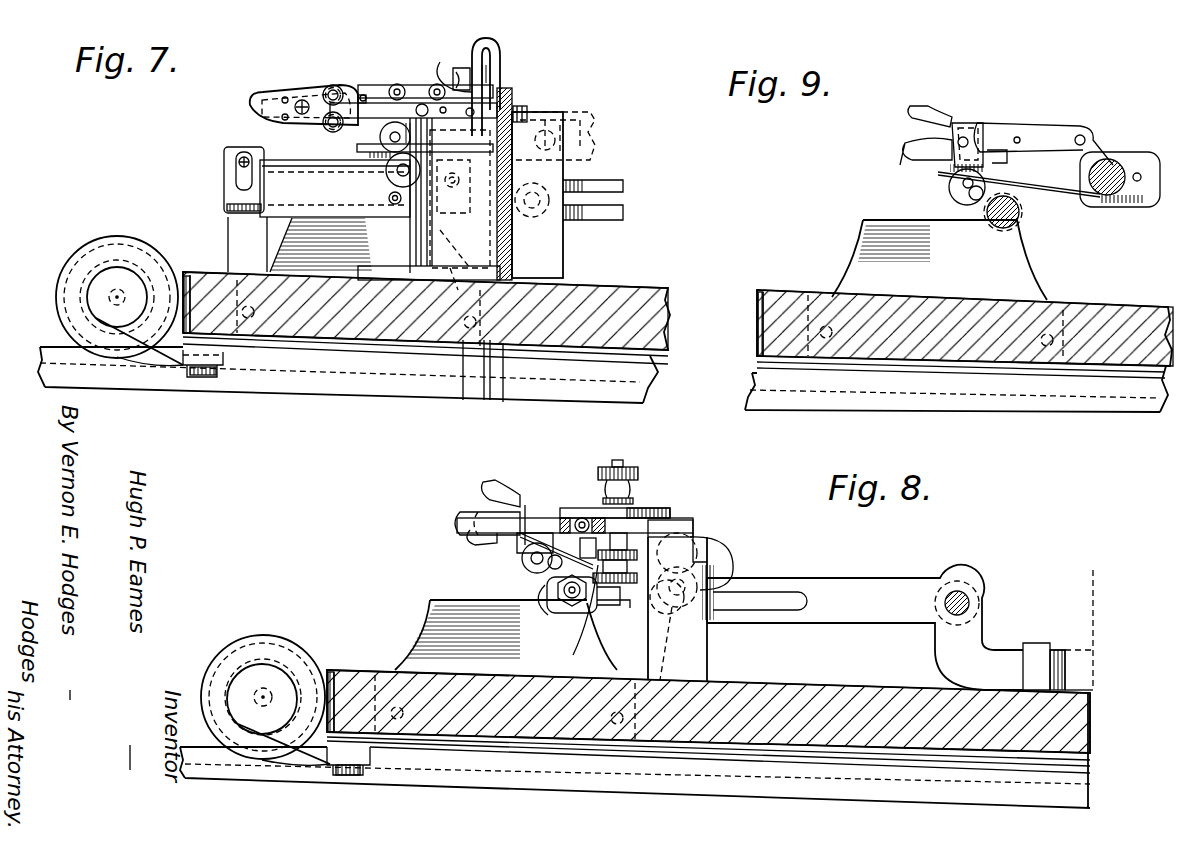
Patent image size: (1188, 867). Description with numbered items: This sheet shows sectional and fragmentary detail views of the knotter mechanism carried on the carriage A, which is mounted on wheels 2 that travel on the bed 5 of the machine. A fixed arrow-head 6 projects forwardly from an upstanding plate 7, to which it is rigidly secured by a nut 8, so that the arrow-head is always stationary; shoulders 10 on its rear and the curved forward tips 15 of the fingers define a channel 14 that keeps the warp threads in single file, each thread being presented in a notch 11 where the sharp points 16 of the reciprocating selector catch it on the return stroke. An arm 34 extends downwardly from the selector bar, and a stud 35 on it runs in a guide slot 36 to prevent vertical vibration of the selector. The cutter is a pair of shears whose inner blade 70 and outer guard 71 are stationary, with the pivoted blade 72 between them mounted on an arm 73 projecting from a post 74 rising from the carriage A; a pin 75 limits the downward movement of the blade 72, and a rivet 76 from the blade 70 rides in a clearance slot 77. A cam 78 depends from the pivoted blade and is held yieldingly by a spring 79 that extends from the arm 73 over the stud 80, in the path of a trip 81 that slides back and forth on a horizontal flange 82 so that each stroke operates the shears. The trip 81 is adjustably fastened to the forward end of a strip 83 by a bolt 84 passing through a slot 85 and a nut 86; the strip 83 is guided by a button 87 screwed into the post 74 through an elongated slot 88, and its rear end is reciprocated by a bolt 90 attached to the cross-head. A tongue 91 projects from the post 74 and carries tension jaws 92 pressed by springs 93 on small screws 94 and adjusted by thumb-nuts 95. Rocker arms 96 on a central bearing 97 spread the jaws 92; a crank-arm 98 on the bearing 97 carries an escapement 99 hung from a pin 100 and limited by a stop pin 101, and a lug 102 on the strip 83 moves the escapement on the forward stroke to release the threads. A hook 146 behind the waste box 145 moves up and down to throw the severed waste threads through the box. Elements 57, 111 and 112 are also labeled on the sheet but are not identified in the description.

In FIG. 7, the wheels 2 is at (73, 262).
In FIG. 8, the wheels 2 is at (212, 670).
In FIG. 7, the bed 5 is at (452, 66).
In FIG. 7, the arrow-head 6 is at (272, 100).
In FIG. 7, the upstanding plate 7 is at (514, 100).
In FIG. 7, the nut 8 is at (518, 112).
In FIG. 7, the shoulders 10 is at (358, 92).
In FIG. 7, the notch 11 is at (368, 88).
In FIG. 7, the channel 14 is at (353, 93).
In FIG. 7, the curved forward tips 15 is at (355, 135).
In FIG. 7, the sharp points 16 is at (527, 110).
In FIG. 7, the arm 34 is at (386, 172).
In FIG. 7, the stud 35 is at (395, 183).
In FIG. 7, the guide slot 36 is at (325, 165).
In FIG. 7, the housing 57 is at (278, 147).
In FIG. 9, the inner blade 70 is at (950, 120).
In FIG. 8, the inner blade 70 is at (508, 498).
In FIG. 9, the outer guard 71 is at (930, 155).
In FIG. 8, the outer guard 71 is at (495, 545).
In FIG. 9, the pivoted blade 72 is at (978, 122).
In FIG. 9, the arm 73 is at (1112, 160).
In FIG. 7, the post 74 is at (548, 242).
In FIG. 8, the post 74 is at (716, 633).
In FIG. 9, the pin 75 is at (1020, 136).
In FIG. 9, the rivet 76 is at (1008, 163).
In FIG. 9, the clearance slot 77 is at (968, 140).
In FIG. 9, the cam 78 is at (952, 190).
In FIG. 8, the cam 78 is at (522, 565).
In FIG. 9, the spring 79 is at (1075, 198).
In FIG. 8, the spring 79 is at (757, 588).
In FIG. 9, the stud 80 is at (973, 200).
In FIG. 8, the stud 80 is at (550, 568).
In FIG. 9, the trip 81 is at (1018, 220).
In FIG. 7, the flange 82 is at (280, 238).
In FIG. 9, the flange 82 is at (880, 222).
In FIG. 8, the flange 82 is at (430, 603).
In FIG. 8, the strip 83 is at (870, 590).
In FIG. 8, the bolt 84 is at (572, 610).
In FIG. 8, the slot 85 is at (605, 610).
In FIG. 8, the nut 86 is at (548, 610).
In FIG. 8, the button 87 is at (672, 620).
In FIG. 8, the elongated slot 88 is at (760, 592).
In FIG. 8, the bolt 90 is at (966, 596).
In FIG. 8, the tongue 91 is at (458, 522).
In FIG. 8, the tension jaws 92 is at (530, 512).
In FIG. 8, the springs 93 is at (635, 510).
In FIG. 8, the small screws 94 is at (618, 466).
In FIG. 8, the thumb-nuts 95 is at (637, 475).
In FIG. 8, the rocker arms 96 is at (572, 517).
In FIG. 8, the central bearing 97 is at (622, 522).
In FIG. 8, the crank-arm 98 is at (525, 545).
In FIG. 8, the escapement 99 is at (548, 605).
In FIG. 8, the pin 100 is at (668, 508).
In FIG. 8, the stop pin 101 is at (580, 550).
In FIG. 8, the lug 102 is at (598, 612).
In FIG. 8, the wall 111 is at (1095, 646).
In FIG. 8, the pin 112 is at (1035, 640).
In FIG. 7, the waste box 145 is at (425, 243).
In FIG. 7, the hook 146 is at (501, 52).
In FIG. 7, the carriage A is at (595, 292).
In FIG. 9, the carriage A is at (1112, 303).
In FIG. 8, the carriage A is at (845, 690).